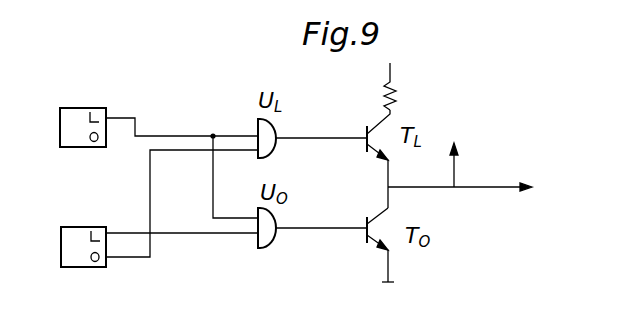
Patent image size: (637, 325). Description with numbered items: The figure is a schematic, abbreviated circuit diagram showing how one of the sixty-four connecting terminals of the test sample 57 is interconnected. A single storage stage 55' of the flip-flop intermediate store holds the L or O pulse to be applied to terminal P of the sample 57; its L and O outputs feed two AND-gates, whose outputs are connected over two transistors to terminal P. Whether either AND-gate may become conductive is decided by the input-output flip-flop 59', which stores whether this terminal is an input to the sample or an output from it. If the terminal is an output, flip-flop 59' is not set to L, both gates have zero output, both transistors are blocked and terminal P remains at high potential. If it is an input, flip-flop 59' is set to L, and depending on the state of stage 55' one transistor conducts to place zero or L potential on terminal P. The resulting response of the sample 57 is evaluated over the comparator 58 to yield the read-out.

The EAF input-output flip-flop 59' is at (88, 132).
The storage stage 55' is at (68, 266).
The comparator 58 is at (466, 150).
The test sample 57 is at (486, 188).